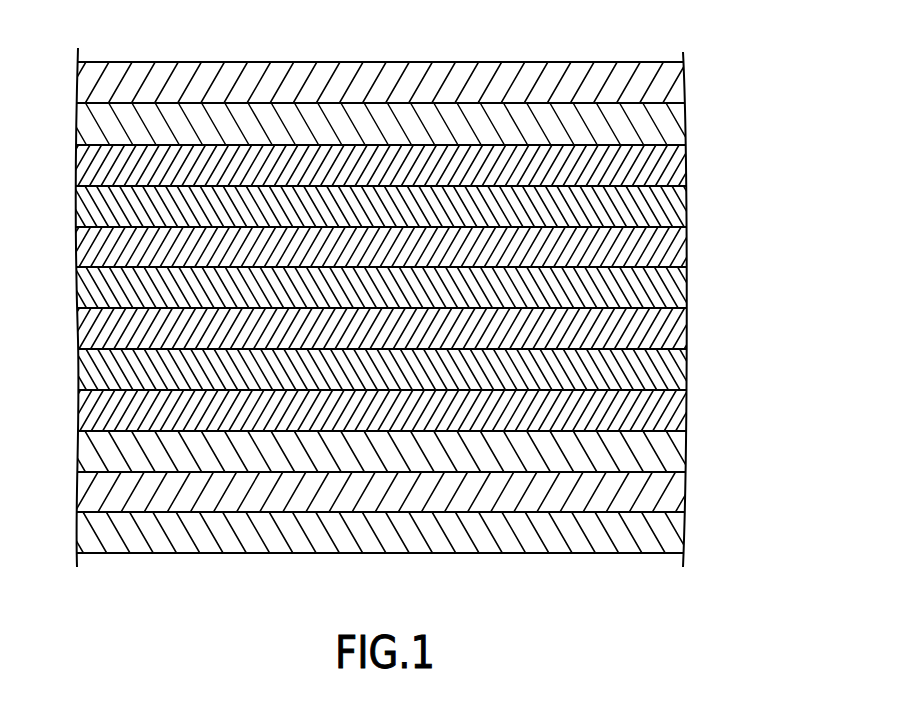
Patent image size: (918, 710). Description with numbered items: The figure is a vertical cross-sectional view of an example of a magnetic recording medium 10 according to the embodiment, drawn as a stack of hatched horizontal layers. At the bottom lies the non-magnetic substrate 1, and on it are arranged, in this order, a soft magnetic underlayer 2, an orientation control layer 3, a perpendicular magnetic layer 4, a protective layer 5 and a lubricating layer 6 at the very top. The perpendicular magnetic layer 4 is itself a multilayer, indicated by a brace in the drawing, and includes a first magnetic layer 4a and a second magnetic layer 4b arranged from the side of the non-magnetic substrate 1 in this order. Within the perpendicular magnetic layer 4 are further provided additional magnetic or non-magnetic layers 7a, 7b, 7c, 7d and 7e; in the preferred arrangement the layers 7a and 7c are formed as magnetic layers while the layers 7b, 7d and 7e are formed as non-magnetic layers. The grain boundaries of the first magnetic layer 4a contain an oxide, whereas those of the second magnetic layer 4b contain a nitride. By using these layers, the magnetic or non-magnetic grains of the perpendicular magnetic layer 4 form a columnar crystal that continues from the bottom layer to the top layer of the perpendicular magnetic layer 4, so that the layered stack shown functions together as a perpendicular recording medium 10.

The magnetic recording medium 10 is at (787, 23).
The non-magnetic substrate 1 is at (670, 531).
The soft magnetic underlayer 2 is at (670, 491).
The orientation control layer 3 is at (670, 451).
The perpendicular magnetic layer 4 is at (418, 288).
The first magnetic layer 4a is at (670, 248).
The second magnetic layer 4b is at (670, 166).
The protective layer 5 is at (672, 125).
The lubricating layer 6 is at (672, 83).
The magnetic layer 7a is at (399, 410).
The non-magnetic layer 7b is at (672, 369).
The magnetic layer 7c is at (672, 329).
The non-magnetic layer 7d is at (672, 288).
The non-magnetic layer 7e is at (672, 207).